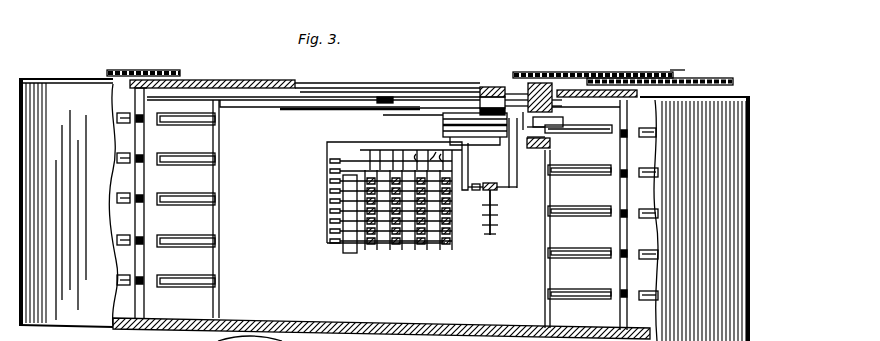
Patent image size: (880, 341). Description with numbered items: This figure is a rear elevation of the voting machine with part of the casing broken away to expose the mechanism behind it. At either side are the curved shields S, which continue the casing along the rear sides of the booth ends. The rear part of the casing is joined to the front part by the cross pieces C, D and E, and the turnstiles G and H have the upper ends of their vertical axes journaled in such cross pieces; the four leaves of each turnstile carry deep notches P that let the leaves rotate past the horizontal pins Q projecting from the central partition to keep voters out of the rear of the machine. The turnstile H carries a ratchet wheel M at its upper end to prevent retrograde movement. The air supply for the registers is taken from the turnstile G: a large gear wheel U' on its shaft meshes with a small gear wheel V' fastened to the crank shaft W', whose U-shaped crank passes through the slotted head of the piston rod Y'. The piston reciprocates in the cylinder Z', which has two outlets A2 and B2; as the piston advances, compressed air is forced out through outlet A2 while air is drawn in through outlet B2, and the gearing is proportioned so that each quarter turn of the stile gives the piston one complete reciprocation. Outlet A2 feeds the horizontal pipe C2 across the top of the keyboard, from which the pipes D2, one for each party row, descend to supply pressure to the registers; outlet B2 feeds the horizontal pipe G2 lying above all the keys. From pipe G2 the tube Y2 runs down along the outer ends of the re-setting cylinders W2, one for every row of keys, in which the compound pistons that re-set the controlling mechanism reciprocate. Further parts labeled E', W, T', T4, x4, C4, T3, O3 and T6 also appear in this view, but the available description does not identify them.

The curved shield S is at (40, 168).
The cross piece E is at (305, 87).
The frame post E' is at (132, 203).
The ratchet wheel M is at (163, 70).
The pawl W is at (385, 82).
The shaft T' is at (390, 78).
The cross piece D is at (489, 87).
The small gear wheel V' is at (593, 81).
The large gear wheel U' is at (642, 81).
The bar T4 is at (682, 78).
The turnstile H is at (188, 209).
The turnstile G is at (578, 226).
The cross piece C is at (630, 140).
The deep notch P is at (167, 162).
The horizontal pin Q is at (182, 203).
The cylinder Z' is at (461, 128).
The outlet A2 is at (443, 131).
The outlet B2 is at (507, 140).
The junction x4 is at (492, 186).
The arm C4 is at (505, 189).
The contact bus T3 is at (498, 216).
The contact O3 is at (482, 225).
The horizontal pipe G2 is at (352, 142).
The horizontal pipe C2 is at (378, 170).
The pipe D2 is at (405, 170).
The tube Y2 is at (327, 182).
The re-setting cylinder W2 is at (327, 222).
The bar T6 is at (352, 236).
The crank shaft W' is at (558, 139).
The piston rod Y' is at (529, 142).